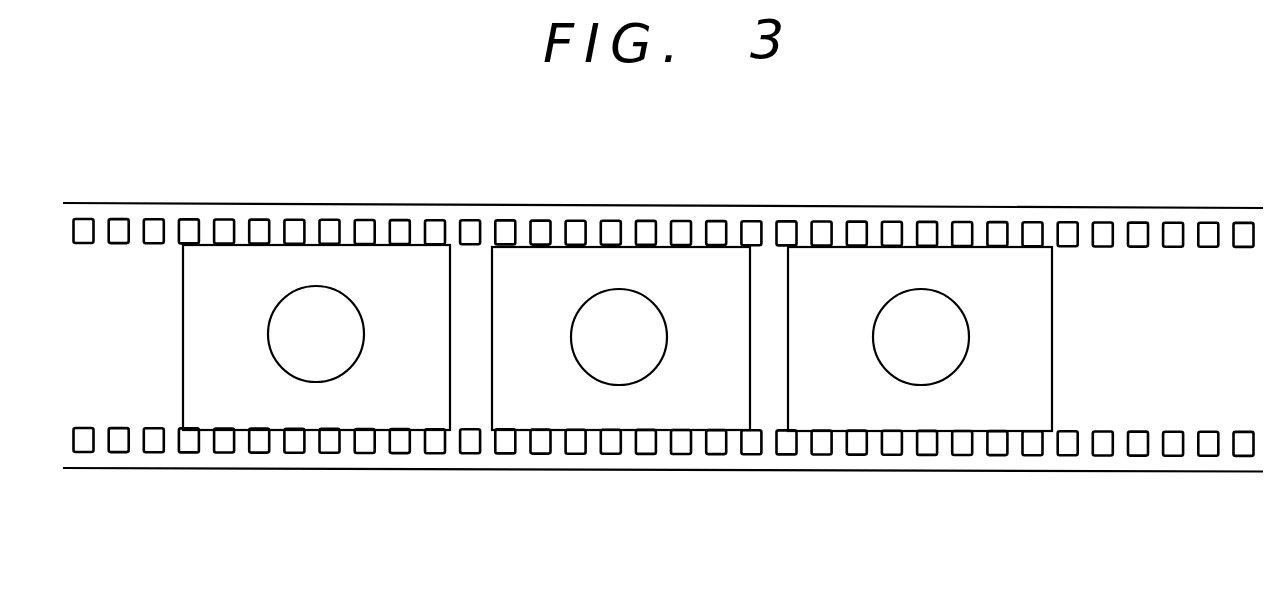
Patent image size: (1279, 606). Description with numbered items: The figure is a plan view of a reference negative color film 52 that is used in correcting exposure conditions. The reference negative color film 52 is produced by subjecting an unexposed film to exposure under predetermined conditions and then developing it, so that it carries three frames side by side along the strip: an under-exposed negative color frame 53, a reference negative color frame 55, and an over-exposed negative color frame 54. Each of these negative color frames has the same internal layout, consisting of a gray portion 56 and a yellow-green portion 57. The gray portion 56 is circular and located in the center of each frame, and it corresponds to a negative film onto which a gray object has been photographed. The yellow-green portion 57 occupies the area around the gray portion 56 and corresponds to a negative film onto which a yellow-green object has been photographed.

The reference negative color film 52 is at (1102, 297).
The under-exposed negative color frame 53 is at (345, 245).
The over-exposed negative color frame 54 is at (906, 247).
The reference negative color frame 55 is at (640, 245).
The gray portion 56 is at (323, 343).
The yellow-green portion 57 is at (226, 395).